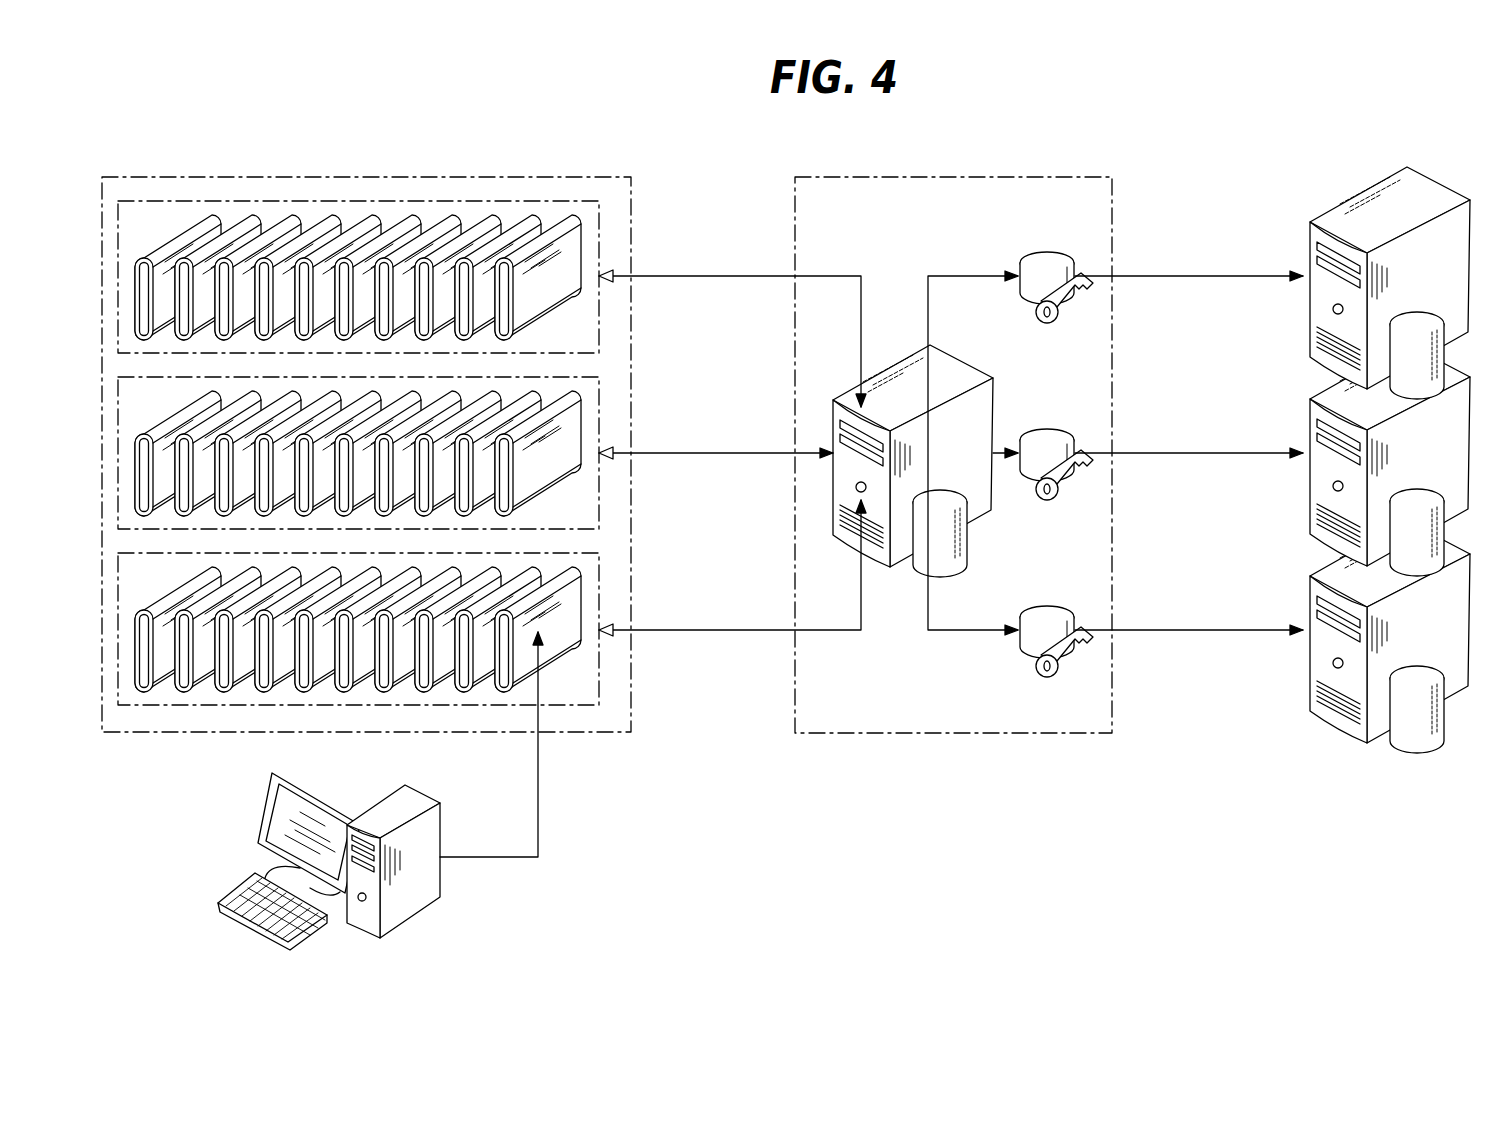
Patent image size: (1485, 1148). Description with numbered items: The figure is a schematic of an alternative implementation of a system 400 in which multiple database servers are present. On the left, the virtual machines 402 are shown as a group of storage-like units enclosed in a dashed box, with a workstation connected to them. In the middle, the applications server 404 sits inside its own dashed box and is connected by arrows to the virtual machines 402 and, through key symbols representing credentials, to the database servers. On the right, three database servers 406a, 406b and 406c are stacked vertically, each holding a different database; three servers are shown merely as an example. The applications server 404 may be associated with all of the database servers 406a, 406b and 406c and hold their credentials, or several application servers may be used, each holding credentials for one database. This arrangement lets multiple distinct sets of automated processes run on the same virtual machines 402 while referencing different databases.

The system 400 is at (786, 522).
The virtual machines 402 is at (153, 723).
The applications server 404 is at (882, 722).
The database server 406a is at (1352, 198).
The database server 406b is at (1310, 408).
The database server 406c is at (1345, 742).